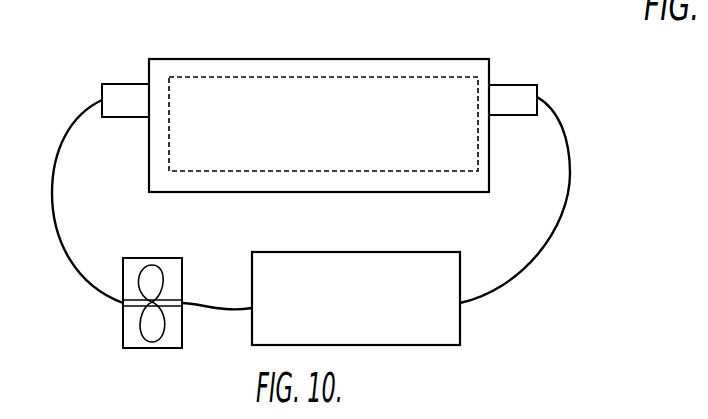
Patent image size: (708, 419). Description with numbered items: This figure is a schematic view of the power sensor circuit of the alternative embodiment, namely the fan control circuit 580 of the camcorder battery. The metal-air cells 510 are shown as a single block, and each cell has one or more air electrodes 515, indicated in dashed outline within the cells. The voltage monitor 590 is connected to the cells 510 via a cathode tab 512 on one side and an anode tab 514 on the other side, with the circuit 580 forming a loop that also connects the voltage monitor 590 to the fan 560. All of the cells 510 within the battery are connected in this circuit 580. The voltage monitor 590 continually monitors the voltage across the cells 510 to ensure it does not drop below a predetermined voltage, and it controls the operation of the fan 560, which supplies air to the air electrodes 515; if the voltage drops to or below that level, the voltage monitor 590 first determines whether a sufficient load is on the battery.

The metal-air cells 510 is at (254, 60).
The cathode tab 512 is at (125, 83).
The anode tab 514 is at (505, 85).
The air electrodes 515 is at (394, 77).
The fan 560 is at (123, 320).
The fan control circuit 580 is at (571, 182).
The voltage monitor 590 is at (323, 252).